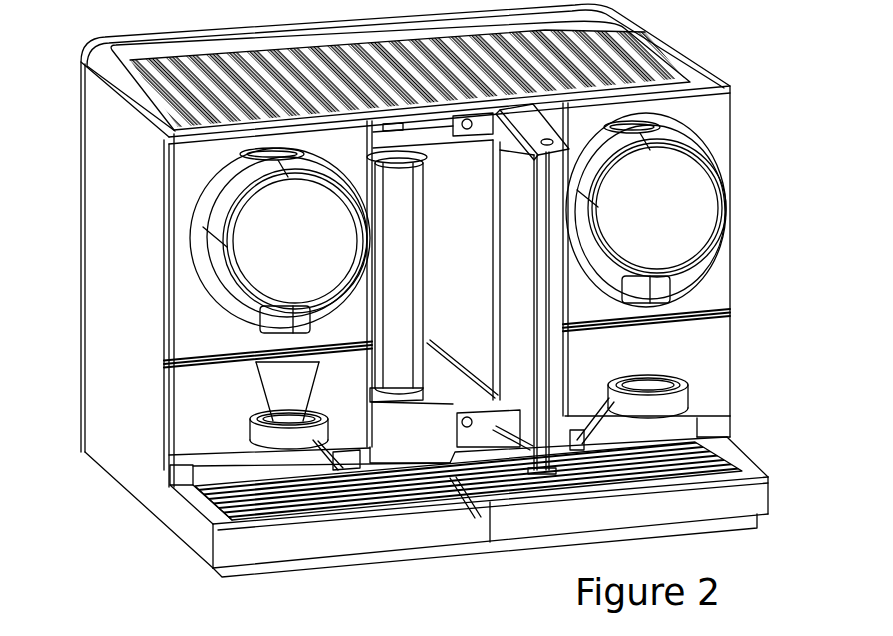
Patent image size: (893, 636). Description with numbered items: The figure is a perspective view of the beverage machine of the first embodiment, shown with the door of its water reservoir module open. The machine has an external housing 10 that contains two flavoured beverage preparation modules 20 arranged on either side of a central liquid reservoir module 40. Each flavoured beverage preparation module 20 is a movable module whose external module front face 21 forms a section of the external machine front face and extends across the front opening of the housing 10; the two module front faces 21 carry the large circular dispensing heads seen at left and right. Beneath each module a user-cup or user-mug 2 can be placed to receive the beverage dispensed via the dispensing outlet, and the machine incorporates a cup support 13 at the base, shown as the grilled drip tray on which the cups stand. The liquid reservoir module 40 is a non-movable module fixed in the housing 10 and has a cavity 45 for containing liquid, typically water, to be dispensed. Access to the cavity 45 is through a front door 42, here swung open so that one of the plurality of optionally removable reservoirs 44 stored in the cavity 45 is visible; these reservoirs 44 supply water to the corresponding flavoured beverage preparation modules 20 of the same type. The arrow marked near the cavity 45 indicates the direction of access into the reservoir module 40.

The external housing 10 is at (100, 242).
The external module front face 21 is at (187, 167).
The flavoured beverage preparation module 20 is at (182, 400).
The user-cup or user-mug 2 is at (272, 370).
The cup support 13 is at (750, 472).
The liquid reservoir module 40 is at (423, 137).
The removable reservoir 44 is at (397, 188).
The front door 42 is at (525, 297).
The cavity 45 is at (466, 309).